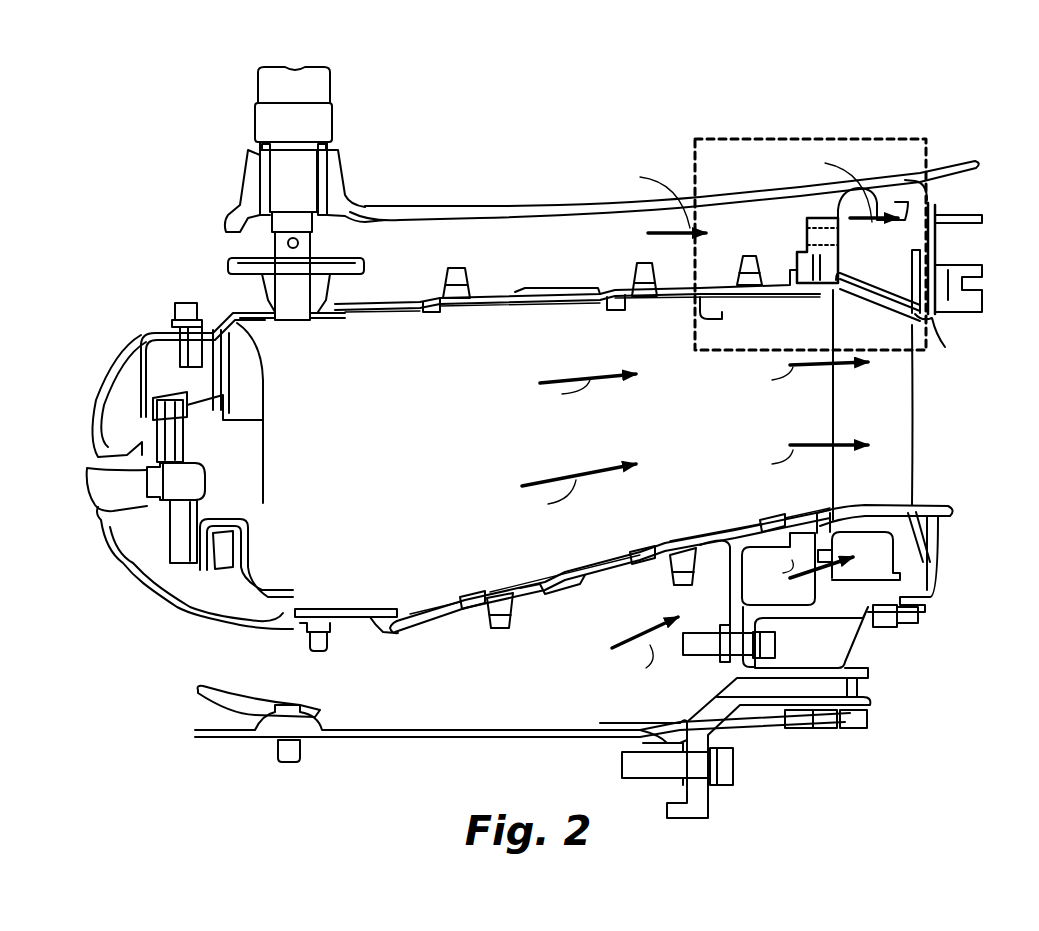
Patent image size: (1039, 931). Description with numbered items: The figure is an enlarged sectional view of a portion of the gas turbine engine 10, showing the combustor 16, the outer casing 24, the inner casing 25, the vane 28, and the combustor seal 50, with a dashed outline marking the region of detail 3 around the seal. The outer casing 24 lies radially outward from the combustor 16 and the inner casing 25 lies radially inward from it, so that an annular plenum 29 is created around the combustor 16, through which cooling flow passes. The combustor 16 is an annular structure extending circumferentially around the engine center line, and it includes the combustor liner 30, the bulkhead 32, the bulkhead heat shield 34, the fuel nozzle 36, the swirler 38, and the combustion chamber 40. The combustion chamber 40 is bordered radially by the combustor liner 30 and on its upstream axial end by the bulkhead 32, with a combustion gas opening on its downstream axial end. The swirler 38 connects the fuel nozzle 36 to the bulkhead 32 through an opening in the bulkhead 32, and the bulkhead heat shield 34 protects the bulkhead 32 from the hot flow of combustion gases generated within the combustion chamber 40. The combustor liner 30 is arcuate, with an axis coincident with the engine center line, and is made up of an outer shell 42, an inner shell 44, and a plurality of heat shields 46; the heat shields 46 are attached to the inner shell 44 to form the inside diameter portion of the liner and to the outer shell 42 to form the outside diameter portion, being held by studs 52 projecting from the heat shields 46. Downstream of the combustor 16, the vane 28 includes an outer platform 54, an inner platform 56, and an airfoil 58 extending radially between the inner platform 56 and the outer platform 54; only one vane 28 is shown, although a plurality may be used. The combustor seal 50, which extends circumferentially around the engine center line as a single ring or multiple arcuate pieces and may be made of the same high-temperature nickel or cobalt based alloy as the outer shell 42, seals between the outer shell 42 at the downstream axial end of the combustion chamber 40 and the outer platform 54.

The gas turbine engine 10 is at (664, 157).
The detail region of FIG. 3 is at (882, 139).
The combustor 16 is at (492, 284).
The outer casing 24 is at (400, 206).
The inner casing 25 is at (462, 738).
The vane 28 is at (818, 413).
The annular plenum 29 is at (584, 249).
The combustor liner 30 is at (466, 632).
The bulkhead 32 is at (222, 360).
The bulkhead heat shield 34 is at (252, 570).
The fuel nozzle 36 is at (205, 458).
The swirler 38 is at (240, 515).
The combustion chamber 40 is at (420, 432).
The outer shell 42 is at (539, 284).
The inner shell 44 is at (545, 606).
The heat shields 46 is at (430, 313).
The combustor seal 50 is at (787, 246).
The studs 52 is at (452, 268).
The outer platform 54 is at (932, 325).
The inner platform 56 is at (937, 505).
The airfoil 58 is at (906, 405).